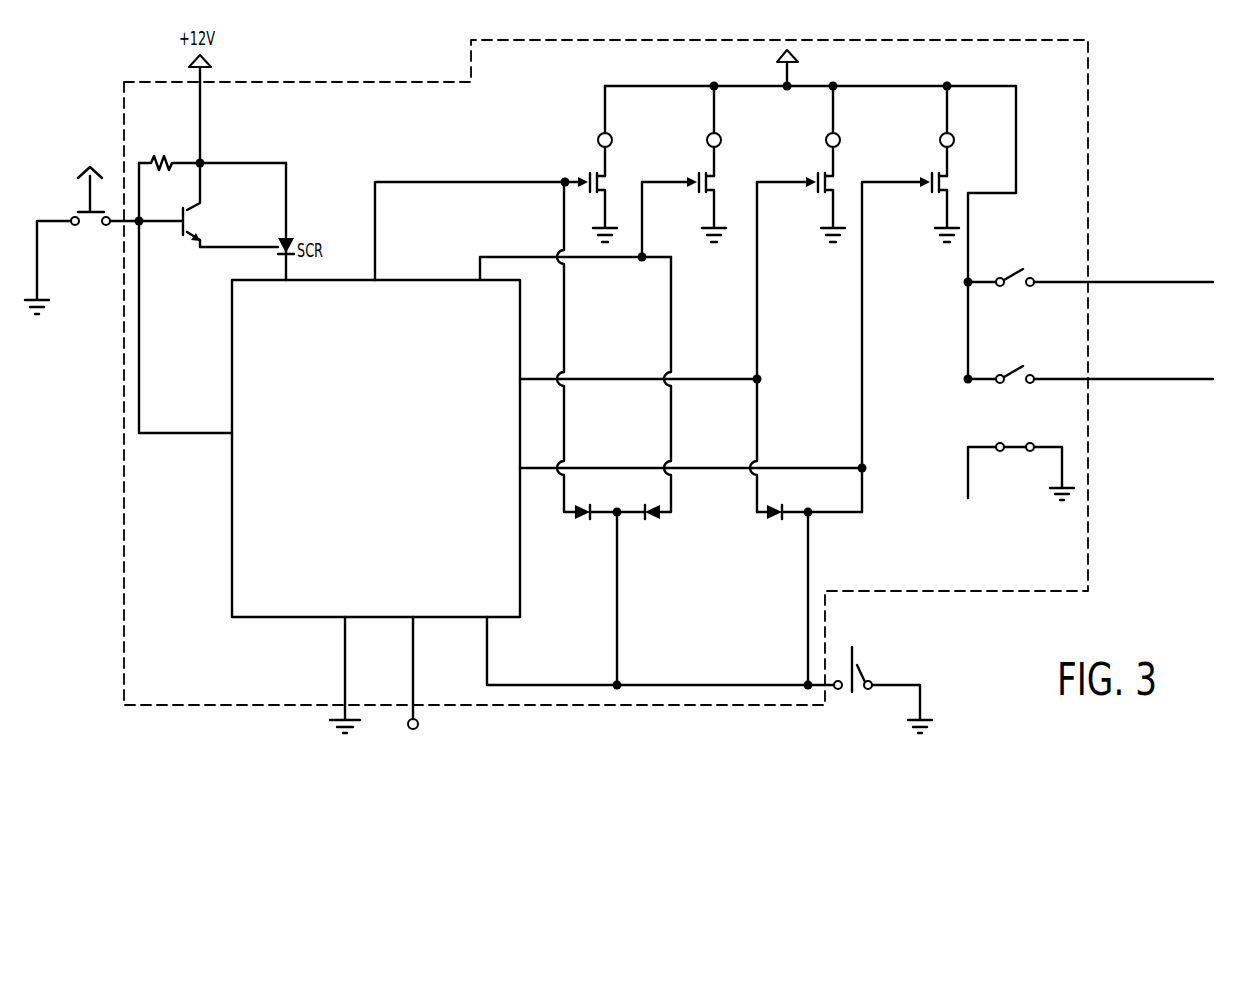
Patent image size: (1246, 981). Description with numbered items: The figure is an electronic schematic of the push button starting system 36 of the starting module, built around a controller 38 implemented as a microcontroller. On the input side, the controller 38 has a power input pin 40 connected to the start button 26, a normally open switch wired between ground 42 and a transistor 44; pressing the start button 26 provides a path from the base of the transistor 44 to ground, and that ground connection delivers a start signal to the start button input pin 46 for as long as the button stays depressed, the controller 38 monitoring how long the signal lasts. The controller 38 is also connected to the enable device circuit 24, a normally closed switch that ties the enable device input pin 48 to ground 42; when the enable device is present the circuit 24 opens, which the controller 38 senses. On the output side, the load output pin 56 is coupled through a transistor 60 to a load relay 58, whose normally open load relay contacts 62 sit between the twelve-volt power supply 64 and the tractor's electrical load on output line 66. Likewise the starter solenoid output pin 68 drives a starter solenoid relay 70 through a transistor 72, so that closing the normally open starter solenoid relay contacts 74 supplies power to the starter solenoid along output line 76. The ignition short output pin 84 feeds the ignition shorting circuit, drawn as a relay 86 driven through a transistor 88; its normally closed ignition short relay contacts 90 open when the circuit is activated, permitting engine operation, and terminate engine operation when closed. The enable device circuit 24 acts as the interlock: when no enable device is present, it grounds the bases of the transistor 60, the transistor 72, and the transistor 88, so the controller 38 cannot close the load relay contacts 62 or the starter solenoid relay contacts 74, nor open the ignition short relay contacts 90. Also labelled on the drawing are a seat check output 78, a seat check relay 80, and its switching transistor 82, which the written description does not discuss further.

The enable device circuit 24 is at (862, 683).
The start button 26 is at (88, 193).
The starting system 36 is at (296, 82).
The controller 38 is at (345, 278).
The power input pin 40 is at (284, 264).
The ground 42 is at (37, 262).
The transistor 44 is at (197, 222).
The start button input pin 46 is at (196, 432).
The enable device input pin 48 is at (488, 651).
The load output pin 56 is at (479, 262).
The load relay 58 is at (710, 133).
The transistor 60 is at (717, 182).
The load relay contacts 62 is at (1022, 272).
The 12-volt power supply 64 is at (793, 47).
The output line 66 is at (1113, 283).
The starter solenoid output pin 68 is at (553, 377).
The starter solenoid relay 70 is at (826, 140).
The transistor 72 is at (836, 182).
The starter solenoid relay contacts 74 is at (1012, 382).
The output line 76 is at (1113, 378).
The seat check output 78 is at (375, 218).
The seat check relay 80 is at (597, 141).
The seat check relay transistor 82 is at (608, 182).
The ignition short output pin 84 is at (545, 465).
The relay 86 is at (942, 138).
The transistor 88 is at (946, 183).
The ignition short relay contacts 90 is at (1013, 450).